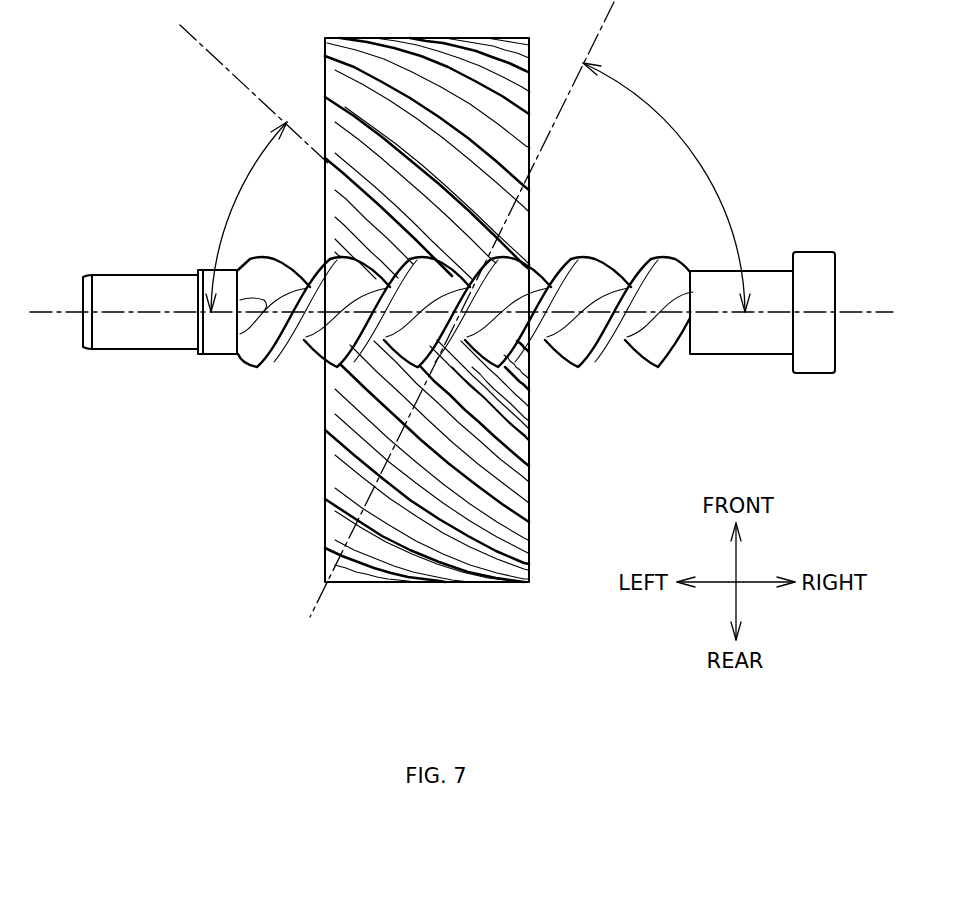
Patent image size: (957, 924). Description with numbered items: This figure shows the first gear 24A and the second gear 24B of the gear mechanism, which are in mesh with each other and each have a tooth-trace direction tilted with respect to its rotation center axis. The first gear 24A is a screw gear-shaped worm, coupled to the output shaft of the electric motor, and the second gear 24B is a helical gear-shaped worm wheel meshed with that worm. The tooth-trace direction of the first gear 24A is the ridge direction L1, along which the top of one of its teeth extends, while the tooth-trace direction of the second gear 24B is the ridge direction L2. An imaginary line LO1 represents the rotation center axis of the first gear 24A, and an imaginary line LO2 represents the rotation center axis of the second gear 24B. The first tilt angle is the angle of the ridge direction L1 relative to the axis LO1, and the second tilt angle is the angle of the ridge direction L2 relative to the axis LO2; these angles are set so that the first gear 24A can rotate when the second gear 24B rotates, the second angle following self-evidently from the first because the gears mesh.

The first gear 24A is at (588, 369).
The second gear 24B is at (325, 84).
The ridge direction L1 is at (618, 10).
The ridge direction L2 is at (198, 48).
The imaginary line LO1 is at (862, 314).
The imaginary line LO2 is at (62, 311).